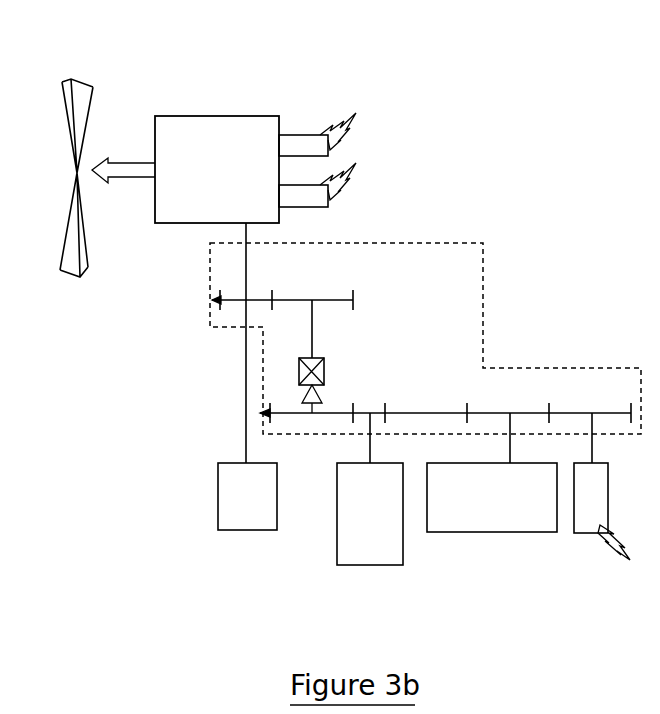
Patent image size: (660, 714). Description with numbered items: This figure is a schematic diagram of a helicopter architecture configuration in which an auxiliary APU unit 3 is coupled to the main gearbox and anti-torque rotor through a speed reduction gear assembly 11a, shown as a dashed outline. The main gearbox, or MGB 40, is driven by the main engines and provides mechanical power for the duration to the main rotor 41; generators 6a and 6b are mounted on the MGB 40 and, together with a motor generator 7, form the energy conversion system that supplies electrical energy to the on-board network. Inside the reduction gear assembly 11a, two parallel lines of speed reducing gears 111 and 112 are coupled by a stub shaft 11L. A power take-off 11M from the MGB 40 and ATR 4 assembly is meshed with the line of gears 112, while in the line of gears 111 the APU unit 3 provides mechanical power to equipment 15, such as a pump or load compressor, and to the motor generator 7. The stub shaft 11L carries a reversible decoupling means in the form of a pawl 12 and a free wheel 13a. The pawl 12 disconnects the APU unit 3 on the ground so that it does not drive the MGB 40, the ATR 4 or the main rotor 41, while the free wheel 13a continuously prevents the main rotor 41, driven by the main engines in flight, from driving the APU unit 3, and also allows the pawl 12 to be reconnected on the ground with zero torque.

The main rotor 41 is at (80, 80).
The main gearbox (MGB) 40 is at (222, 116).
The generator 6a is at (297, 133).
The generator 6b is at (310, 210).
The speed reduction gear assembly 11a is at (481, 243).
The power take-off 11M is at (246, 347).
The line of speed reducing gears 112 is at (212, 300).
The stub shaft 11L is at (312, 327).
The pawl 12 is at (324, 365).
The free wheel 13a is at (322, 395).
The line of speed reducing gears 111 is at (260, 413).
The anti-torque rotor (ATR) 4 is at (250, 530).
The auxiliary engine (APU unit) 3 is at (390, 565).
The equipment 15 is at (500, 532).
The motor generator 7 is at (583, 533).